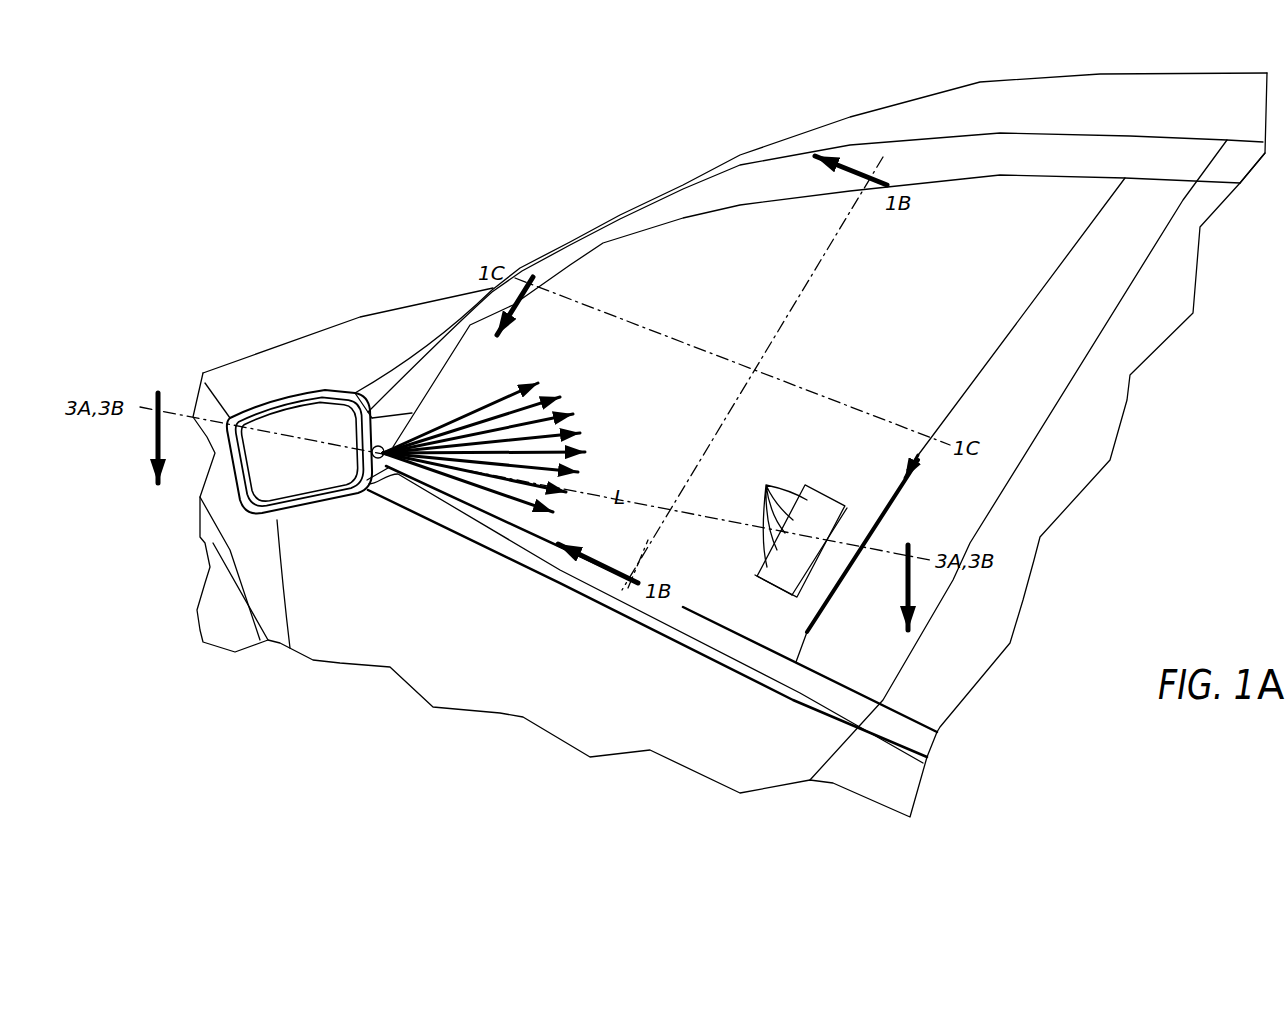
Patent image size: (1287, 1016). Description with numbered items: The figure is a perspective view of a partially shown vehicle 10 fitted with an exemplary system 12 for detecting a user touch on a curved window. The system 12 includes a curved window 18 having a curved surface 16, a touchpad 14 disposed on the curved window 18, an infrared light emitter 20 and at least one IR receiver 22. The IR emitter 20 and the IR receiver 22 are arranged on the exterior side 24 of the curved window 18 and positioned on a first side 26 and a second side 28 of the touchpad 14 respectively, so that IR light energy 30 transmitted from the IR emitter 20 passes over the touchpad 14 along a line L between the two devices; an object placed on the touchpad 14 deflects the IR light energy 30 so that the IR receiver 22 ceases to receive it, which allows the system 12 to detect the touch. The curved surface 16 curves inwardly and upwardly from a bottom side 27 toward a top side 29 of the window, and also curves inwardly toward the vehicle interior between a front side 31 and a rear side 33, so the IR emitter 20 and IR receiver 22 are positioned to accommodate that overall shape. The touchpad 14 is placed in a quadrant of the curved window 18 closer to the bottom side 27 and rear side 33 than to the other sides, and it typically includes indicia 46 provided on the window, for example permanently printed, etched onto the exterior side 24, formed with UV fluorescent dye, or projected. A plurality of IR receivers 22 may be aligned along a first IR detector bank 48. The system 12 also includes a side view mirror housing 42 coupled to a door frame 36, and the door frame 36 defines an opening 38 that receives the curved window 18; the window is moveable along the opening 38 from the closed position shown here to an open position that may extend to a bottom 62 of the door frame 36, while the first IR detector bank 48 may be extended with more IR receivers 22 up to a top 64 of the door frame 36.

The vehicle 10 is at (255, 350).
The system 12 is at (500, 222).
The touchpad 14 is at (777, 590).
The curved surface 16 is at (769, 441).
The curved window 18 is at (650, 248).
The IR emitter 20 is at (360, 495).
The IR receiver 22 is at (888, 530).
The exterior side 24 is at (735, 248).
The first side 26 is at (763, 568).
The bottom side 27 is at (542, 537).
The second side 28 is at (802, 592).
The top side 29 is at (955, 88).
The IR light energy 30 is at (488, 497).
The front side 31 is at (595, 248).
The rear side 33 is at (973, 378).
The door frame 36 is at (1058, 155).
The opening 38 is at (1007, 257).
The side view mirror housing 42 is at (290, 395).
The indicia 46 is at (771, 520).
The first IR detector bank 48 is at (827, 607).
The bottom 62 is at (722, 625).
The top 64 is at (1012, 177).